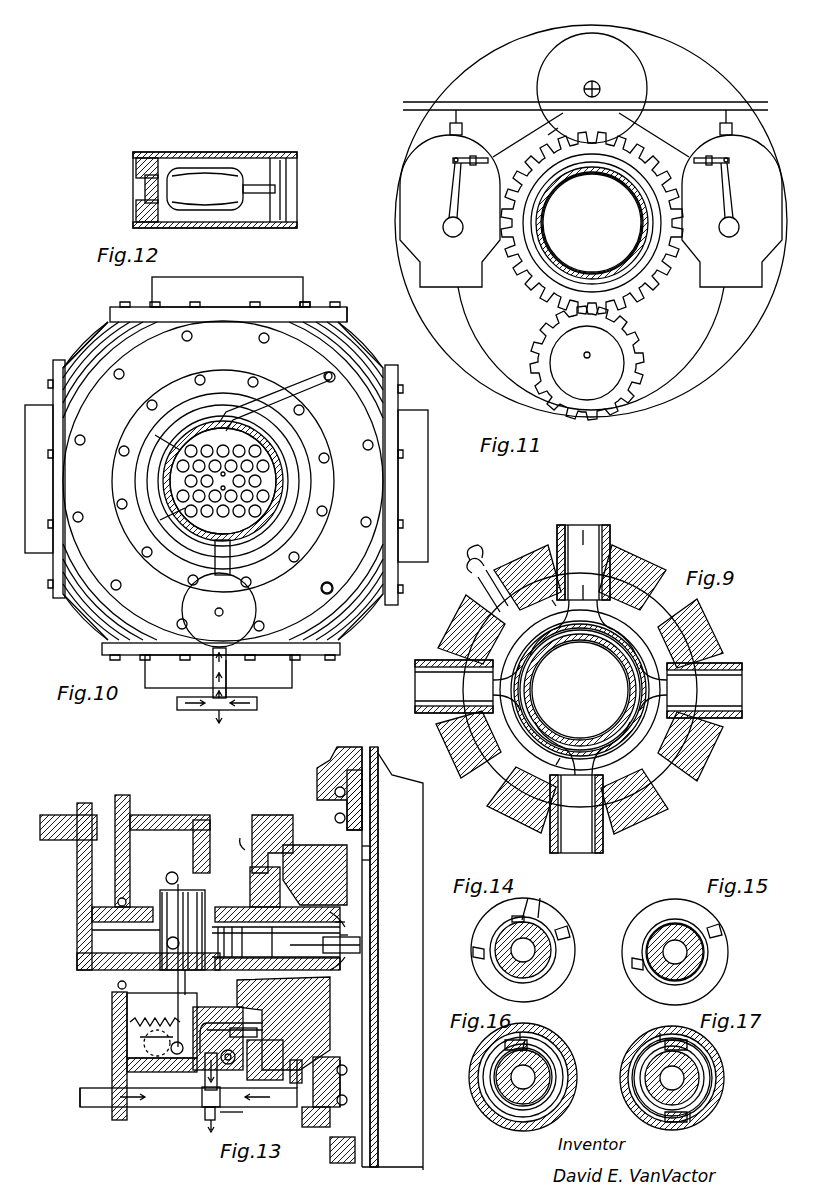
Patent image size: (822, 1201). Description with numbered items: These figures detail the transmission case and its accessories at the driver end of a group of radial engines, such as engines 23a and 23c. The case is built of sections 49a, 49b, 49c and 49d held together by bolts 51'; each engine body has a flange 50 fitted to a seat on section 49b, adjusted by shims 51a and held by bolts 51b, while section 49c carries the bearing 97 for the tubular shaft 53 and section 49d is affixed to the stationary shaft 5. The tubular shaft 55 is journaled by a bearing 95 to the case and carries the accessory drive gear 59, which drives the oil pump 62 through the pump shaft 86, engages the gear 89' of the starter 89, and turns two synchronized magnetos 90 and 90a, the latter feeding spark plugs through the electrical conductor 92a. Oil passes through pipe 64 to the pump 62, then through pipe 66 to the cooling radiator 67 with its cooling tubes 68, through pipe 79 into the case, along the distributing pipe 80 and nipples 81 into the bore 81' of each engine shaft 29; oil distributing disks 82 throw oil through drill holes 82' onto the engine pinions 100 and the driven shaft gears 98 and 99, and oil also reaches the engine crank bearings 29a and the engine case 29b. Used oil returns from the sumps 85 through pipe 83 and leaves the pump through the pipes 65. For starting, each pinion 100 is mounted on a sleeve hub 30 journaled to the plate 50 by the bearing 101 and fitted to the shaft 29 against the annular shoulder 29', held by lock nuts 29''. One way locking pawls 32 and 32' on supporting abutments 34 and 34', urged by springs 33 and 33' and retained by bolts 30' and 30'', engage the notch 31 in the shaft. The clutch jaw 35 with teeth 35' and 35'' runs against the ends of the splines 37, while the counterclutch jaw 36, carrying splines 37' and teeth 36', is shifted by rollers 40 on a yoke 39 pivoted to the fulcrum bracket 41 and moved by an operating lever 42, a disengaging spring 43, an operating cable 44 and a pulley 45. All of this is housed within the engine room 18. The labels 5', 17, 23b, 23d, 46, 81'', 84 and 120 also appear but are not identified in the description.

In FIG. 11, the stationary shaft 5 is at (591, 223).
In FIG. 10, the stationary shaft 5 is at (237, 481).
In FIG. 9, the stationary shaft 5 is at (580, 690).
In FIG. 13, the stationary shaft 5 is at (392, 957).
In FIG. 11, the shell interior 5' is at (592, 223).
In FIG. 9, the shell interior 5' is at (580, 690).
In FIG. 13, the shell interior 5' is at (400, 961).
In FIG. 13, the spring 17 is at (223, 942).
In FIG. 13, the engine room 18 is at (226, 942).
In FIG. 10, the engine 23a is at (226, 483).
In FIG. 9, the engine 23a is at (444, 687).
In FIG. 10, the nozzle connection 23b is at (288, 283).
In FIG. 9, the nozzle connection 23b is at (600, 520).
In FIG. 9, the engine 23c is at (715, 690).
In FIG. 10, the nozzle connection 23d is at (276, 690).
In FIG. 9, the nozzle connection 23d is at (576, 822).
In FIG. 9, the engine drive shaft 29 is at (559, 687).
In FIG. 13, the engine drive shaft 29 is at (276, 946).
In FIG. 14, the engine drive shaft 29 is at (526, 950).
In FIG. 15, the engine drive shaft 29 is at (666, 952).
In FIG. 16, the engine drive shaft 29 is at (523, 1084).
In FIG. 17, the engine drive shaft 29 is at (678, 1078).
In FIG. 13, the annular shoulder 29' is at (239, 1033).
In FIG. 9, the lock nuts 29'' is at (576, 688).
In FIG. 13, the lock nuts 29'' is at (347, 922).
In FIG. 13, the engine crank bearings 29a is at (129, 882).
In FIG. 13, the engine case 29b is at (138, 1050).
In FIG. 9, the sleeve hub 30 is at (563, 689).
In FIG. 13, the sleeve hub 30 is at (277, 938).
In FIG. 16, the sleeve hub 30 is at (530, 1077).
In FIG. 13, the retaining bolt 30' is at (221, 913).
In FIG. 15, the retaining bolt 30' is at (679, 952).
In FIG. 13, the retaining bolt 30'' is at (191, 989).
In FIG. 16, the engaging notch 31 is at (519, 1077).
In FIG. 17, the engaging notch 31 is at (668, 1078).
In FIG. 13, the one way locking pawl 32 is at (237, 942).
In FIG. 16, the one way locking pawl 32 is at (529, 1032).
In FIG. 17, the one way locking pawl 32 is at (648, 1030).
In FIG. 13, the one way locking pawl 32' is at (245, 942).
In FIG. 17, the one way locking pawl 32' is at (703, 1122).
In FIG. 16, the spring 33 is at (509, 1077).
In FIG. 17, the spring 33 is at (662, 1074).
In FIG. 17, the spring 33' is at (685, 1078).
In FIG. 16, the supporting abutment 34 is at (532, 1035).
In FIG. 17, the supporting abutment 34 is at (676, 1030).
In FIG. 17, the supporting abutment 34' is at (648, 1118).
In FIG. 13, the clutch jaw 35 is at (192, 913).
In FIG. 15, the clutch jaw 35 is at (675, 952).
In FIG. 13, the clutch teeth 35' is at (153, 940).
In FIG. 15, the clutch teeth 35' is at (726, 933).
In FIG. 15, the clutch teeth 35'' is at (624, 975).
In FIG. 13, the counterclutch jaw 36 is at (166, 930).
In FIG. 14, the counterclutch jaw 36 is at (523, 950).
In FIG. 13, the clutch teeth 36' is at (179, 914).
In FIG. 14, the clutch teeth 36' is at (511, 944).
In FIG. 14, the splines 37 is at (536, 901).
In FIG. 14, the splines 37' is at (506, 918).
In FIG. 13, the yoke 39 is at (160, 960).
In FIG. 13, the rollers 40 is at (160, 938).
In FIG. 13, the fulcrum bracket 41 is at (165, 871).
In FIG. 13, the operating lever 42 is at (156, 1043).
In FIG. 13, the disengaging spring 43 is at (155, 1016).
In FIG. 13, the operating cable 44 is at (239, 1112).
In FIG. 13, the pulley 45 is at (233, 1063).
In FIG. 13, the valve body 46 is at (195, 1065).
In FIG. 13, the transmission case section 49a is at (317, 790).
In FIG. 10, the transmission case section 49b is at (78, 342).
In FIG. 13, the transmission case section 49b is at (296, 839).
In FIG. 10, the transmission case section 49c is at (223, 481).
In FIG. 13, the transmission case section 49c is at (320, 1084).
In FIG. 11, the accessory section 49d is at (591, 221).
In FIG. 13, the accessory section 49d is at (302, 1117).
In FIG. 10, the engine flange 50 is at (305, 668).
In FIG. 13, the engine flange 50 is at (233, 841).
In FIG. 10, the bolts 51' is at (334, 571).
In FIG. 10, the shims 51a is at (347, 320).
In FIG. 10, the bolts 51b is at (312, 306).
In FIG. 13, the tubular shaft 53 is at (378, 860).
In FIG. 11, the tubular shaft 55 is at (645, 232).
In FIG. 10, the tubular shaft 55 is at (280, 510).
In FIG. 9, the tubular shaft 55 is at (618, 730).
In FIG. 13, the tubular shaft 55 is at (378, 846).
In FIG. 11, the accessory drive gear 59 is at (646, 300).
In FIG. 13, the accessory drive gear 59 is at (330, 1150).
In FIG. 11, the oil pump 62 is at (587, 363).
In FIG. 10, the oil pump 62 is at (219, 610).
In FIG. 10, the oil pipe 64 is at (213, 665).
In FIG. 12, the oil pipes 65 is at (215, 184).
In FIG. 10, the oil pipes 65 is at (226, 676).
In FIG. 10, the oil pipe 66 is at (222, 566).
In FIG. 10, the cooling radiator 67 is at (160, 520).
In FIG. 10, the cooling tubes 68 is at (155, 435).
In FIG. 10, the oil pipe 79 is at (317, 390).
In FIG. 9, the oil pipe 79 is at (470, 582).
In FIG. 9, the distributing pipe 80 is at (505, 785).
In FIG. 13, the distributing pipe 80 is at (348, 933).
In FIG. 9, the nipples 81 is at (585, 687).
In FIG. 9, the bore 81' is at (565, 684).
In FIG. 13, the bore 81' is at (331, 946).
In FIG. 14, the bore 81' is at (523, 950).
In FIG. 15, the bore 81' is at (675, 952).
In FIG. 16, the bore 81' is at (523, 1077).
In FIG. 17, the bore 81' is at (680, 1078).
In FIG. 13, the bore 81'' is at (301, 950).
In FIG. 9, the oil distributing disks 82 is at (552, 668).
In FIG. 13, the oil distributing disks 82 is at (341, 914).
In FIG. 9, the drill holes 82' is at (576, 698).
In FIG. 13, the drill holes 82' is at (342, 970).
In FIG. 10, the return pipe 83 is at (232, 726).
In FIG. 13, the return pipe 83 is at (210, 1092).
In FIG. 12, the float 84 is at (221, 189).
In FIG. 13, the float 84 is at (302, 1078).
In FIG. 13, the oil sumps 85 is at (192, 1068).
In FIG. 10, the oil pump shaft 86 is at (221, 605).
In FIG. 13, the oil pump shaft 86 is at (64, 1097).
In FIG. 11, the starter 89 is at (601, 88).
In FIG. 11, the starter gear 89' is at (543, 135).
In FIG. 11, the magneto 90 is at (450, 205).
In FIG. 11, the magneto 90a is at (732, 205).
In FIG. 11, the electrical conductor 92a is at (726, 108).
In FIG. 10, the bearing 95 is at (285, 530).
In FIG. 13, the bearing 95 is at (350, 1093).
In FIG. 13, the bearing 97 is at (378, 820).
In FIG. 9, the driven shaft gear 98 is at (580, 690).
In FIG. 13, the driven shaft gear 98 is at (292, 1023).
In FIG. 13, the driven shaft gear 99 is at (315, 875).
In FIG. 9, the engine pinion 100 is at (580, 689).
In FIG. 13, the engine pinion 100 is at (265, 883).
In FIG. 13, the bearing 101 is at (285, 942).
In FIG. 10, the tube bundle 120 is at (200, 481).